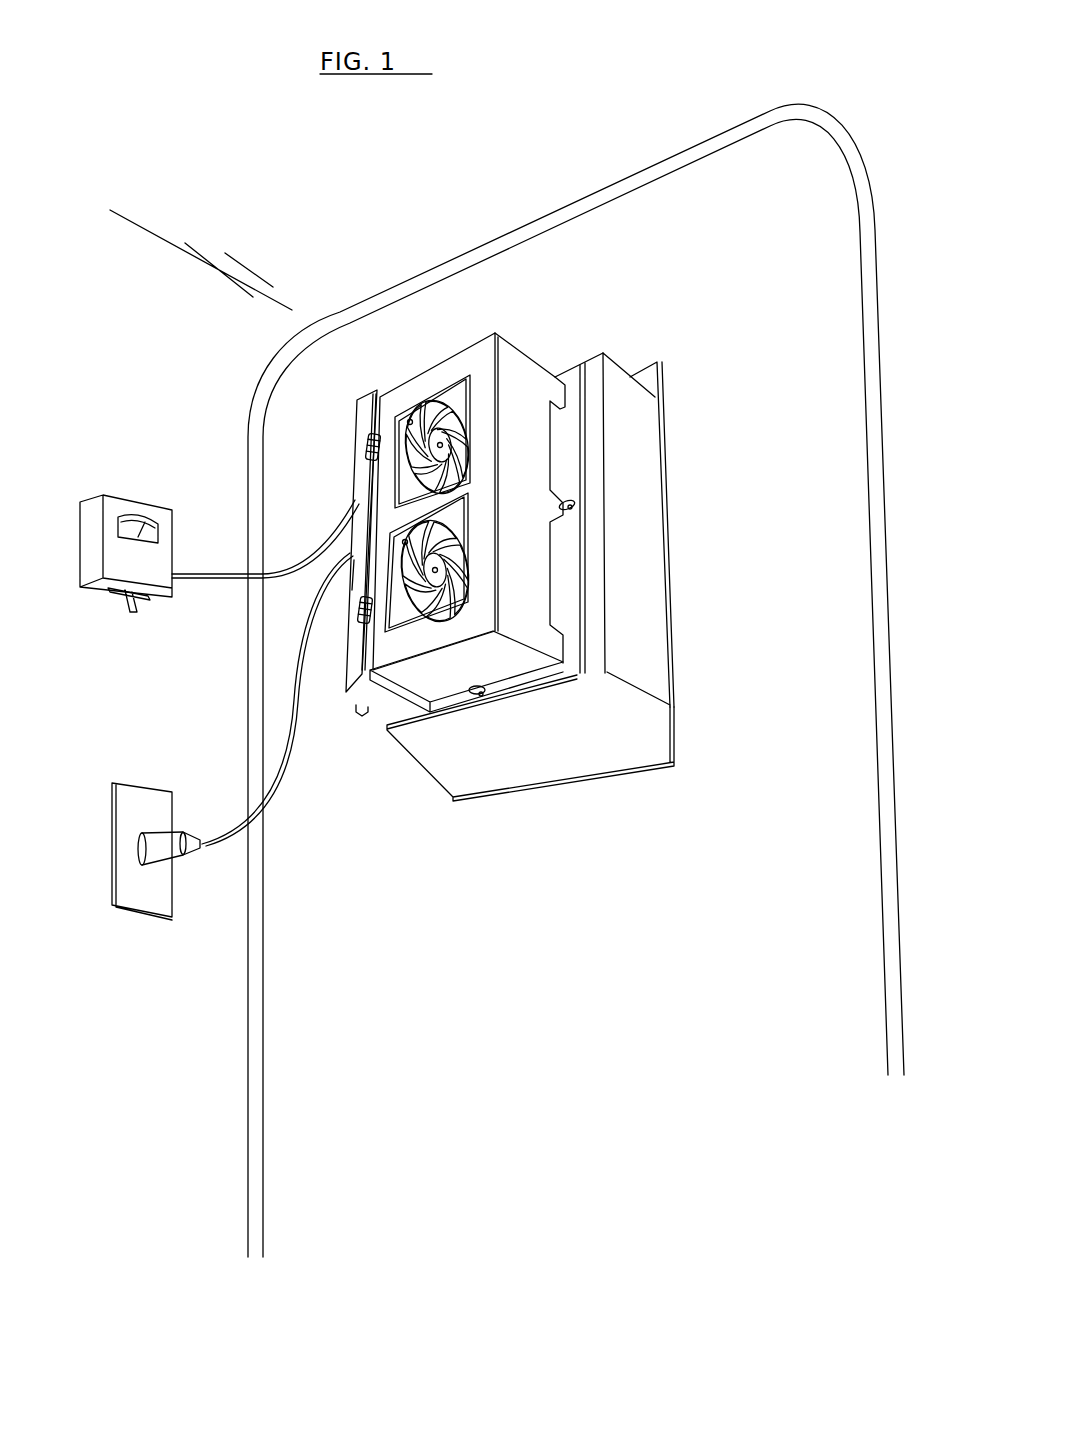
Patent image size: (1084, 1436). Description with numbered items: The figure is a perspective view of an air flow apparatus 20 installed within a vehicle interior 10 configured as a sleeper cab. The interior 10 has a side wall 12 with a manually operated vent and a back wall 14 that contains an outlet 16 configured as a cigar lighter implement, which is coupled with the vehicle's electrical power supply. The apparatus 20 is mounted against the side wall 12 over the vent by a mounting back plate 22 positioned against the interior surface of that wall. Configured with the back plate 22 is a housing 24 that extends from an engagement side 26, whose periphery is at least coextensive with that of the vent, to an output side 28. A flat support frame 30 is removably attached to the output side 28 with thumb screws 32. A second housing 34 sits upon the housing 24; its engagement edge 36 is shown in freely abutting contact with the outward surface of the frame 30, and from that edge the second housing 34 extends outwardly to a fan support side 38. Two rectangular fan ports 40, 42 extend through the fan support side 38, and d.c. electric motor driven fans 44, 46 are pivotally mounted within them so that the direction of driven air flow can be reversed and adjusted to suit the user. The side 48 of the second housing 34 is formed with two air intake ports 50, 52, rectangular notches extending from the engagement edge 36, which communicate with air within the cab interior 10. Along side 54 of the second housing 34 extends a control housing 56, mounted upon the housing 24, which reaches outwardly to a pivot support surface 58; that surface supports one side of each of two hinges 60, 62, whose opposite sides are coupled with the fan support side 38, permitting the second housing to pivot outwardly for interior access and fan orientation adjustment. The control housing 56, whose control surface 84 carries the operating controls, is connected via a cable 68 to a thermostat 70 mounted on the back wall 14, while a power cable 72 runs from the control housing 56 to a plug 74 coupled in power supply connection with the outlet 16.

The vehicle interior 10 is at (737, 256).
The side wall 12 is at (820, 446).
The back wall 14 is at (158, 362).
The outlet 16 is at (158, 787).
The air flow apparatus 20 is at (755, 320).
The mounting back plate 22 is at (647, 738).
The housing 24 is at (637, 470).
The engagement side 26 is at (676, 565).
The output side 28 is at (602, 334).
The support frame 30 is at (573, 380).
The thumb screws 32 is at (570, 505).
The second housing 34 is at (473, 335).
The engagement edge 36 is at (540, 673).
The fan support side 38 is at (433, 369).
The fan port 40 is at (421, 411).
The fan port 42 is at (387, 612).
The electric motor driven fan 44 is at (355, 414).
The electric motor driven fan 46 is at (447, 603).
The side of second housing 48 is at (506, 359).
The air intake port 50 is at (552, 438).
The air intake port 52 is at (551, 592).
The side of housing 54 is at (353, 705).
The control housing 56 is at (345, 490).
The pivot support surface 58 is at (355, 576).
The hinge 60 is at (369, 446).
The hinge 62 is at (359, 606).
The cable 68 is at (197, 573).
The thermostat 70 is at (122, 505).
The power cable 72 is at (285, 768).
The plug 74 is at (175, 836).
The control surface 84 is at (360, 712).